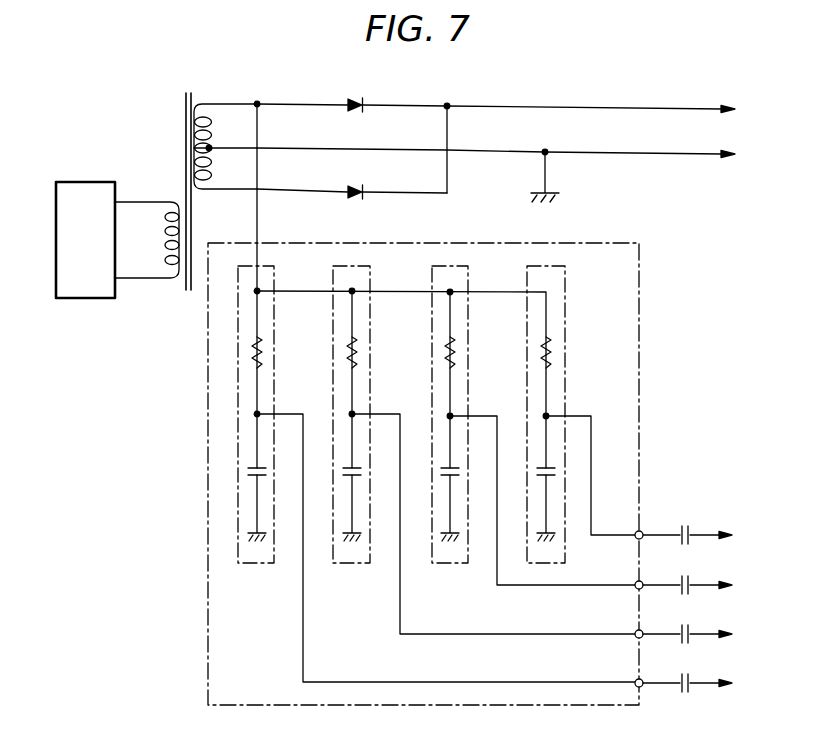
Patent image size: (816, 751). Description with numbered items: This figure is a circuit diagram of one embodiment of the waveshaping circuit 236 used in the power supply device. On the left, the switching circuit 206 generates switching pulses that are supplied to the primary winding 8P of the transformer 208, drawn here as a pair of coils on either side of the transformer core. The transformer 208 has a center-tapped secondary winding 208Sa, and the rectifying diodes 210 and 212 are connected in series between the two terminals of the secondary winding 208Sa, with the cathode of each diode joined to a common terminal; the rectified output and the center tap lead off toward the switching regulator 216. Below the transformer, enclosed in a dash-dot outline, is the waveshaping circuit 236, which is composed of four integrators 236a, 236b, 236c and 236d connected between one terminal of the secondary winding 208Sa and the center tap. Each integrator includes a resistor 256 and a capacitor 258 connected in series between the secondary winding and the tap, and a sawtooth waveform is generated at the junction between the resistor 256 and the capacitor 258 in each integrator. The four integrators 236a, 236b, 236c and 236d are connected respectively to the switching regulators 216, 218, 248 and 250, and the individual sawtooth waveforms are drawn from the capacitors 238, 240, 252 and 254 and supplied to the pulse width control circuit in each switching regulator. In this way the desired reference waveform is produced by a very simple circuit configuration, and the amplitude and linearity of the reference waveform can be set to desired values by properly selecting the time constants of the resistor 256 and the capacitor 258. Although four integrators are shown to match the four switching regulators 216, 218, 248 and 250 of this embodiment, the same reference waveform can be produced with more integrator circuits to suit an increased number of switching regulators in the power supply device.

The switching circuit 206 is at (73, 200).
The primary winding 8P is at (144, 202).
The transformer 208 is at (187, 291).
The secondary winding 208Sa is at (233, 103).
The rectifying diode 210 is at (359, 92).
The rectifying diode 212 is at (359, 180).
The switching regulator 216 is at (610, 327).
The switching regulator 218 is at (754, 585).
The waveshaping circuit 236 is at (208, 675).
The integrator 236a is at (280, 617).
The integrator 236b is at (378, 617).
The integrator 236c is at (474, 617).
The integrator 236d is at (572, 617).
The capacitor 238 is at (684, 524).
The capacitor 240 is at (687, 573).
The switching regulator 248 is at (754, 634).
The switching regulator 250 is at (754, 683).
The capacitor 252 is at (687, 622).
The capacitor 254 is at (687, 671).
The resistor 256 is at (261, 343).
The capacitor 258 is at (246, 470).